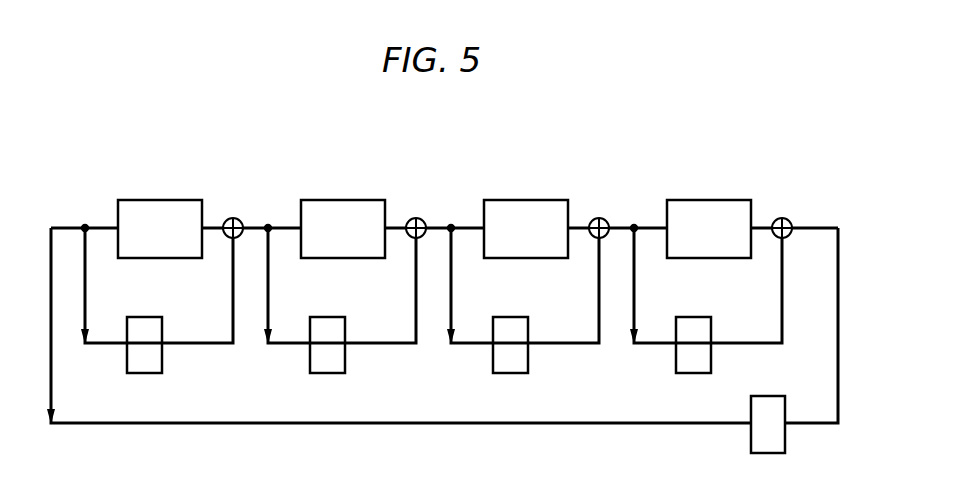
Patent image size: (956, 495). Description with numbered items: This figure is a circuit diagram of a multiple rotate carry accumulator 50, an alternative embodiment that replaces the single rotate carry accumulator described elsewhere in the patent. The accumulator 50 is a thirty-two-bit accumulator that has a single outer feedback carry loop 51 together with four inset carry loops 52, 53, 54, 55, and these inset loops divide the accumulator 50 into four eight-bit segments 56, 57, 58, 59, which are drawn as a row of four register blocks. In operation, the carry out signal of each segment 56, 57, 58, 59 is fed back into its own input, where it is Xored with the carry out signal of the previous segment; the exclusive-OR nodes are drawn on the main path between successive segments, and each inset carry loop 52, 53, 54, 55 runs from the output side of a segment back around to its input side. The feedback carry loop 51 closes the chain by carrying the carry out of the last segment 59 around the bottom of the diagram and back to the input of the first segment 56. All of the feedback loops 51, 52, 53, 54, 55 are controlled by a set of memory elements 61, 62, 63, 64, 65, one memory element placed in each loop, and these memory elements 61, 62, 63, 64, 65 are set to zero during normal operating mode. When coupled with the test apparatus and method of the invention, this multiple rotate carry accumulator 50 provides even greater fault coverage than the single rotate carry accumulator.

The multiple rotate carry accumulator 50 is at (686, 106).
The feedback carry loop 51 is at (838, 348).
The inset carry loop 52 is at (188, 345).
The inset carry loop 53 is at (371, 345).
The inset carry loop 54 is at (554, 345).
The inset carry loop 55 is at (743, 345).
The 8-bit segment 56 is at (158, 200).
The 8-bit segment 57 is at (341, 200).
The 8-bit segment 58 is at (524, 200).
The 8-bit segment 59 is at (707, 200).
The memory element 61 is at (751, 435).
The memory element 62 is at (143, 317).
The memory element 63 is at (326, 317).
The memory element 64 is at (509, 317).
The memory element 65 is at (692, 317).